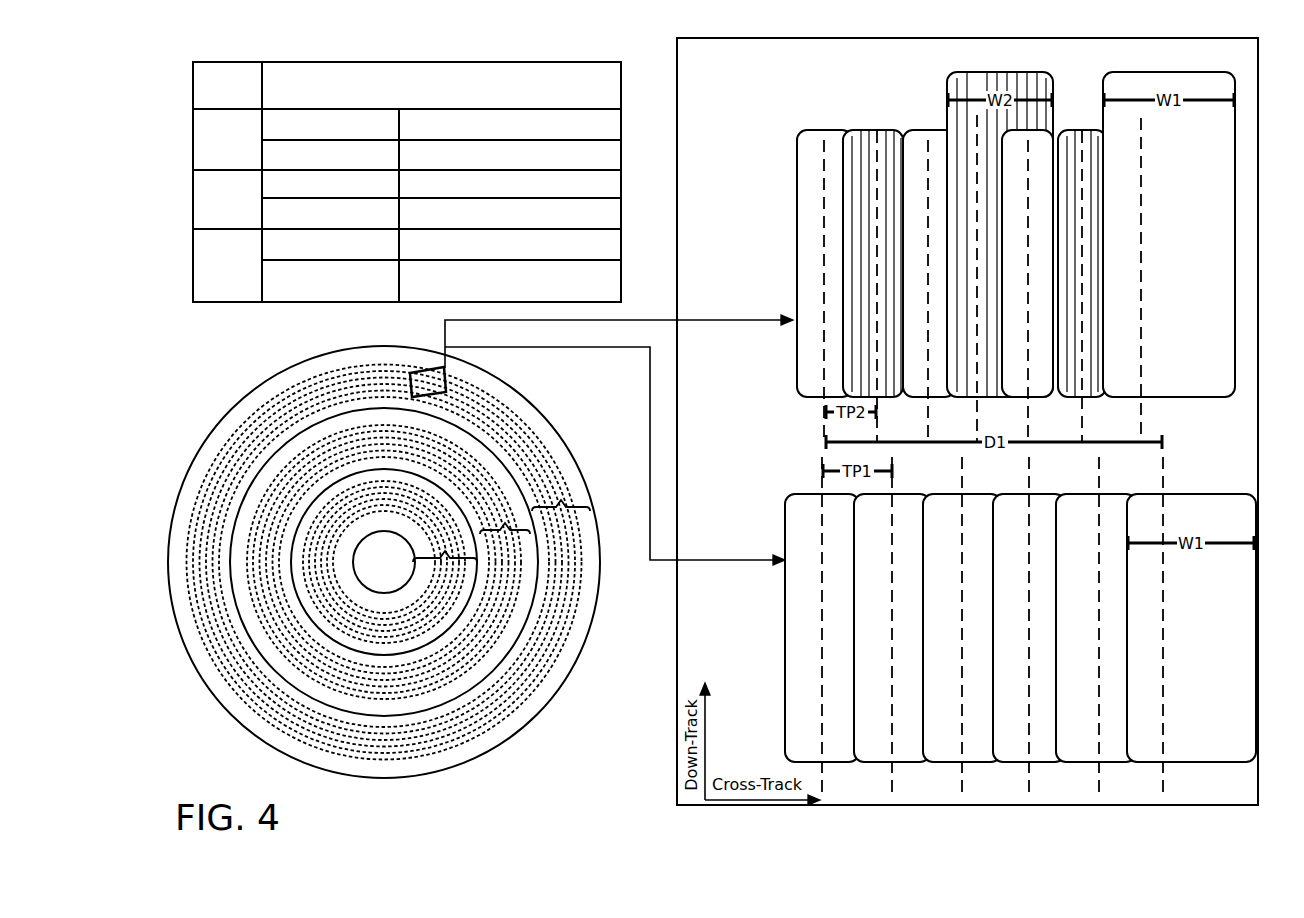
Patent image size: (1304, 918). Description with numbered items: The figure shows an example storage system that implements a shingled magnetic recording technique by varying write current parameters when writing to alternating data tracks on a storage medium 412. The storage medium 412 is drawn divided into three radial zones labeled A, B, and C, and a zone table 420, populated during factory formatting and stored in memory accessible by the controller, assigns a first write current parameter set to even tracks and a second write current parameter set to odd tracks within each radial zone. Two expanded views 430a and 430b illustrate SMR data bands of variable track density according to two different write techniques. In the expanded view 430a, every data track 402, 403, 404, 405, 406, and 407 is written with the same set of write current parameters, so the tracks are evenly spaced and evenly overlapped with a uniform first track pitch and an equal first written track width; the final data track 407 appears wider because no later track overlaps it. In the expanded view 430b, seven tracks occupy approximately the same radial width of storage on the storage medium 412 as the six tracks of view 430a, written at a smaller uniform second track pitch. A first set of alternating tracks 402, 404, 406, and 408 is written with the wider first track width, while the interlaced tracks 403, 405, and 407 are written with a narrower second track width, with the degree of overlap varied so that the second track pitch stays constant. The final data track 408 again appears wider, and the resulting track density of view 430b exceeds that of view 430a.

The data track 402 is at (809, 201).
The data track 403 is at (862, 201).
The data track 404 is at (913, 201).
The data track 405 is at (962, 201).
The data track 406 is at (1013, 201).
The data track 407 is at (1067, 201).
The data track 408 is at (1126, 201).
The storage medium 412 is at (372, 345).
The zone table 420 is at (572, 62).
The expanded view 430a is at (780, 457).
The expanded view 430b is at (783, 133).